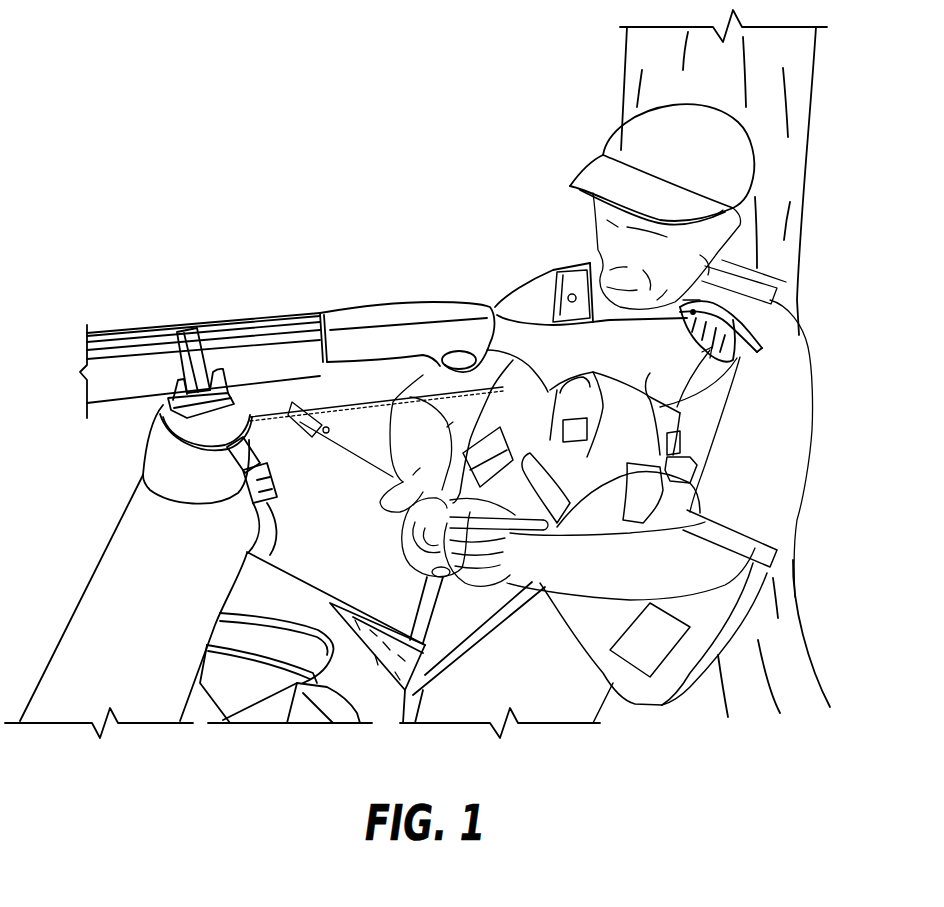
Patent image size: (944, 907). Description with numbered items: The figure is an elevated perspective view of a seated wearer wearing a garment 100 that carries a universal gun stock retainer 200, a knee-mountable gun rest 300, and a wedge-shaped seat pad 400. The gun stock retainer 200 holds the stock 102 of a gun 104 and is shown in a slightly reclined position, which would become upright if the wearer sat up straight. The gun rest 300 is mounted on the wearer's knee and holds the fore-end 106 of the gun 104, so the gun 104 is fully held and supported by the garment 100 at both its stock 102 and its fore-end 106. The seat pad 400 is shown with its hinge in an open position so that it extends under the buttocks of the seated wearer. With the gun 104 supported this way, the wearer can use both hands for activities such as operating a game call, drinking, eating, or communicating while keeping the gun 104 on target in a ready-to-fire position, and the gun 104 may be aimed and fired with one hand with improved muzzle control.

The garment 100 is at (586, 249).
The stock 102 is at (698, 437).
The gun 104 is at (387, 290).
The fore-end 106 is at (120, 388).
The gun stock retainer 200 is at (697, 366).
The gun rest 300 is at (158, 407).
The wedge-shaped seat pad 400 is at (397, 690).